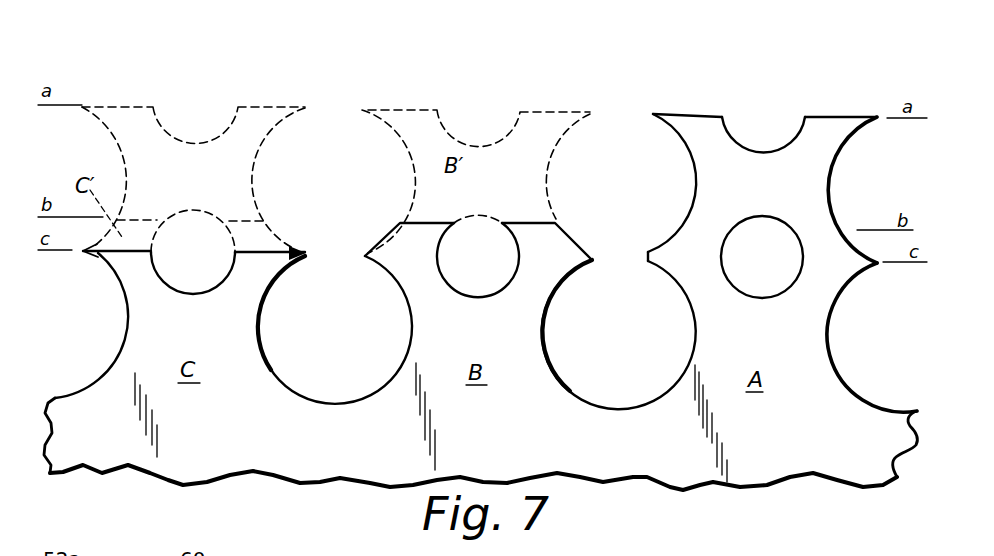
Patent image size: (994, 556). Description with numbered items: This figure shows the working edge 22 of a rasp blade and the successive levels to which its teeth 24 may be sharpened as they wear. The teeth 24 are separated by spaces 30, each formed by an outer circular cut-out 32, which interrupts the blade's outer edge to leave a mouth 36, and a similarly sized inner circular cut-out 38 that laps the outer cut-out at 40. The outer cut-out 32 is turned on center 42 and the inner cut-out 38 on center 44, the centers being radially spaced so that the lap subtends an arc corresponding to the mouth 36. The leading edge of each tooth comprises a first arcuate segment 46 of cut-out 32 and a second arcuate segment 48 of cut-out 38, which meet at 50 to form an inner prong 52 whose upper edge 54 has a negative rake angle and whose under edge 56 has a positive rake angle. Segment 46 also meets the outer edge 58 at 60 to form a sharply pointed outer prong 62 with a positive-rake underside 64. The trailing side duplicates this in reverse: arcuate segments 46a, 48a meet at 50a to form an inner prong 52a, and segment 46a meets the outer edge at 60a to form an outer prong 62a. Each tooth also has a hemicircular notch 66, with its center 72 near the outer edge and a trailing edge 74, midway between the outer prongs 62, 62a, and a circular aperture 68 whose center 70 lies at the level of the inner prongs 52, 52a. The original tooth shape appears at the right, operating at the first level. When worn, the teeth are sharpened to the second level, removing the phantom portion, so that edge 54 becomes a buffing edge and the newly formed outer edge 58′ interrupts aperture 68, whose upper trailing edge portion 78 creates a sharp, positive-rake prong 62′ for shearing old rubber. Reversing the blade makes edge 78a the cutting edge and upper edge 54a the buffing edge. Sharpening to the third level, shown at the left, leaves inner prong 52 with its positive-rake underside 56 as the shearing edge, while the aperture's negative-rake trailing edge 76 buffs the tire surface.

The working edge 22 is at (679, 109).
The teeth 24 is at (207, 335).
The spaces 30 is at (323, 133).
The outer circular cut-out 32 is at (353, 200).
The mouth 36 is at (633, 118).
The inner circular cut-out 38 is at (343, 325).
The lap 40 is at (621, 262).
The center 42 is at (622, 186).
The center 44 is at (620, 328).
The first arcuate segment 46 is at (694, 181).
The arcuate segment 46a is at (832, 180).
The second arcuate segment 48 is at (695, 318).
The arcuate segment 48a is at (832, 338).
The intersection 50 is at (667, 262).
The intersection 50a is at (876, 263).
The inner prong 52 is at (100, 257).
The inner prong 52a is at (852, 264).
The upper edge 54 is at (386, 240).
The upper edge 54a is at (567, 226).
The under edge 56 is at (104, 268).
The outer edge 58 is at (697, 115).
The newly formed tooth outer edge 58′ is at (423, 222).
The intersection 60 is at (651, 118).
The intersection 60a is at (878, 118).
The outer prong 62 is at (677, 120).
The prong 62′ is at (527, 198).
The outer prong 62a is at (853, 118).
The underside 64 is at (696, 172).
The notch 66 is at (782, 148).
The circular aperture 68 is at (490, 284).
The center 70 is at (750, 238).
The center 72 is at (762, 95).
The trailing edge 74 is at (805, 119).
The trailing edge 76 is at (222, 268).
The upper trailing edge portion 78 is at (516, 243).
The edge 78a is at (441, 240).